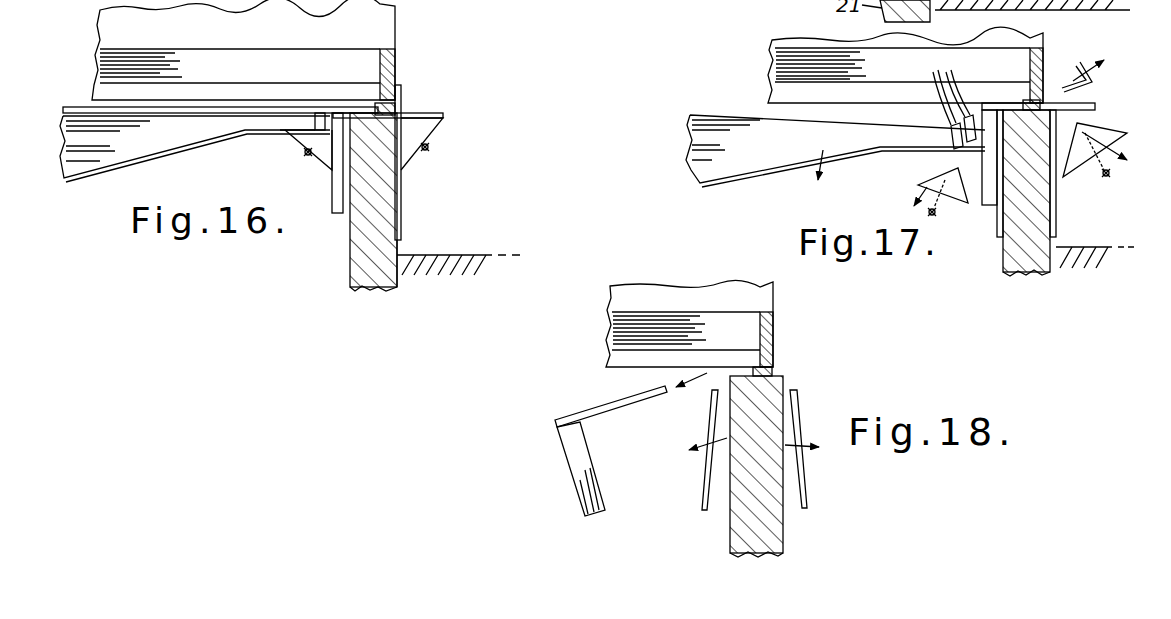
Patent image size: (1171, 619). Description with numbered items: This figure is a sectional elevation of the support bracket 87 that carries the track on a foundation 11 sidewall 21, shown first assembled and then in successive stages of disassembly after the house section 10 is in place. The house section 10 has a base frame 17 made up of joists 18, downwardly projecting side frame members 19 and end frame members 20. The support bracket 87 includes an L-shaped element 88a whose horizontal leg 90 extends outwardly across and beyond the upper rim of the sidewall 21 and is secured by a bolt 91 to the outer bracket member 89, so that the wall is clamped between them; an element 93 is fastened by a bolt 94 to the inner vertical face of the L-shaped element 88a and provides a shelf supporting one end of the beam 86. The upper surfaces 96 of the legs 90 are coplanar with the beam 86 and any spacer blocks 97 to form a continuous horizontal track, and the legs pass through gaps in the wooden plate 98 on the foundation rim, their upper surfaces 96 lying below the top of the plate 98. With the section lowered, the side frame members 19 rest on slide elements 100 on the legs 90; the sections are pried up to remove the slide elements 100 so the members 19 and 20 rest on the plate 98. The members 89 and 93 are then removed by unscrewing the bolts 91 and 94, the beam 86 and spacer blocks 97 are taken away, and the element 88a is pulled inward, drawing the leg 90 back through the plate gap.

In FIG. 16, the house section 10 is at (366, 44).
In FIG. 17, the house section 10 is at (1030, 40).
In FIG. 18, the house section 10 is at (760, 296).
In FIG. 16, the foundation 11 is at (350, 272).
In FIG. 17, the foundation 11 is at (1003, 250).
In FIG. 18, the foundation 11 is at (730, 522).
In FIG. 16, the base frame 17 is at (125, 50).
In FIG. 17, the base frame 17 is at (833, 56).
In FIG. 18, the base frame 17 is at (657, 300).
In FIG. 16, the joists 18 is at (222, 75).
In FIG. 17, the joists 18 is at (778, 66).
In FIG. 18, the joists 18 is at (610, 331).
In FIG. 16, the side frame members 19 is at (396, 57).
In FIG. 17, the side frame members 19 is at (1040, 63).
In FIG. 18, the side frame members 19 is at (775, 333).
In FIG. 16, the end frame members 20 is at (285, 22).
In FIG. 16, the sidewalls 21 is at (383, 288).
In FIG. 17, the sidewalls 21 is at (1025, 268).
In FIG. 18, the sidewalls 21 is at (775, 539).
In FIG. 16, the beam 86 is at (106, 146).
In FIG. 17, the beam 86 is at (734, 156).
In FIG. 16, the support bracket 87 is at (450, 147).
In FIG. 16, the L-shaped element 88a is at (343, 213).
In FIG. 17, the L-shaped element 88a is at (987, 160).
In FIG. 16, the outer bracket member 89 is at (442, 122).
In FIG. 17, the outer bracket member 89 is at (1123, 135).
In FIG. 18, the outer bracket member 89 is at (572, 461).
In FIG. 16, the horizontal leg 90 is at (344, 106).
In FIG. 17, the horizontal leg 90 is at (1097, 105).
In FIG. 18, the horizontal leg 90 is at (605, 406).
In FIG. 17, the bolt 91 is at (1100, 174).
In FIG. 16, the element 93 is at (292, 139).
In FIG. 17, the element 93 is at (915, 184).
In FIG. 17, the bolt 94 is at (950, 210).
In FIG. 16, the upper surfaces 96 is at (420, 112).
In FIG. 17, the spacer blocks 97 is at (937, 76).
In FIG. 16, the wooden plate 98 is at (397, 167).
In FIG. 17, the wooden plate 98 is at (1027, 100).
In FIG. 18, the wooden plate 98 is at (775, 373).
In FIG. 16, the slide elements 100 is at (401, 92).
In FIG. 17, the slide elements 100 is at (1092, 80).